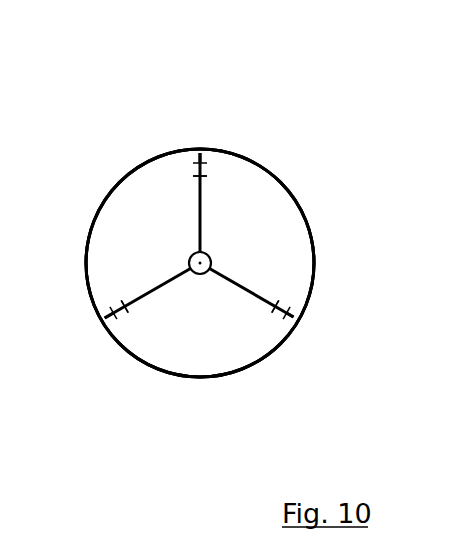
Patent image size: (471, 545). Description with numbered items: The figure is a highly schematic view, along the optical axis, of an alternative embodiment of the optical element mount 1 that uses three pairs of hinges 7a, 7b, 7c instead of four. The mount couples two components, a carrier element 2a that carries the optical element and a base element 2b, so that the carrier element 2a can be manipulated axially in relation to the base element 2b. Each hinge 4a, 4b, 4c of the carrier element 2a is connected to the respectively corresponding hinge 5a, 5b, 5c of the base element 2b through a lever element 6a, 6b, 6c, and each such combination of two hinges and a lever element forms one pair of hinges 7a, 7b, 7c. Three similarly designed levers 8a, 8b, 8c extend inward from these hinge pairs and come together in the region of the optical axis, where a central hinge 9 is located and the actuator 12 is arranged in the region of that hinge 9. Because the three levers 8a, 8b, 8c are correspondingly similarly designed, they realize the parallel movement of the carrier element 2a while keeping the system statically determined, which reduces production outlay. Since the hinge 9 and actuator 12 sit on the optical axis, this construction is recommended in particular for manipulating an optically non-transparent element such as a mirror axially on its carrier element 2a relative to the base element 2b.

The optical element mount 1 is at (200, 188).
The carrier element 2a is at (306, 304).
The base element 2b is at (200, 263).
The hinge 4a is at (200, 163).
The hinge 4b is at (285, 314).
The hinge 4c is at (114, 311).
The hinge 5a is at (195, 177).
The hinge 5b is at (272, 305).
The hinge 5c is at (126, 306).
The lever element 6a is at (195, 176).
The lever element 6b is at (280, 308).
The lever element 6c is at (119, 313).
The pair of hinges 7a is at (115, 300).
The pair of hinges 7b is at (203, 165).
The pair of hinges 7c is at (280, 303).
The lever 8a is at (200, 233).
The lever 8b is at (232, 277).
The lever 8c is at (158, 285).
The hinge 9 is at (199, 268).
The actuator 12 is at (209, 259).